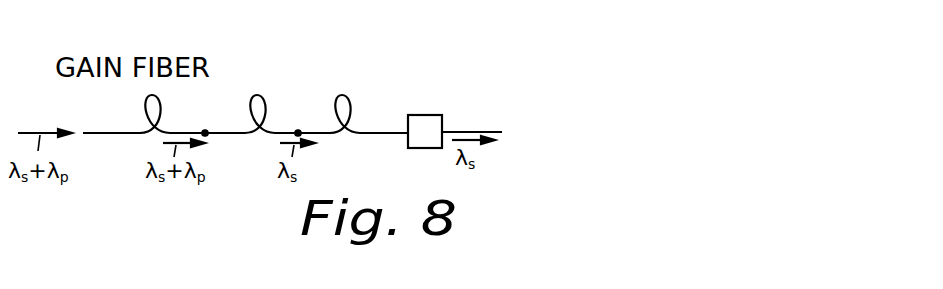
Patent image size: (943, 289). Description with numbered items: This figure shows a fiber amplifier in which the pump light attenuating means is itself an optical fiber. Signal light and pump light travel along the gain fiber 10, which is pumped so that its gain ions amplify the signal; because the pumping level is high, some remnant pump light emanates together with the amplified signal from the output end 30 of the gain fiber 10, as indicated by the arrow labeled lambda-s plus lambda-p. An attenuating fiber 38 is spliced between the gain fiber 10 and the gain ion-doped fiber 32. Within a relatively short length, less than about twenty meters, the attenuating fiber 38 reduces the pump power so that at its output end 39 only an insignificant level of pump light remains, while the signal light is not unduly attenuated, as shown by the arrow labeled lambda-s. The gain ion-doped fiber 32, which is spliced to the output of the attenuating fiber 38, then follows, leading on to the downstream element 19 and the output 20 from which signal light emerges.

The gain fiber 10 is at (147, 101).
The output end of gain fiber 30 is at (193, 130).
The pump light attenuating fiber 38 is at (255, 98).
The output end of attenuating fiber 39 is at (287, 130).
The gain ion-doped fiber 32 is at (346, 108).
The output element (filter/isolator) 19 is at (417, 150).
The output signal 20 is at (477, 126).